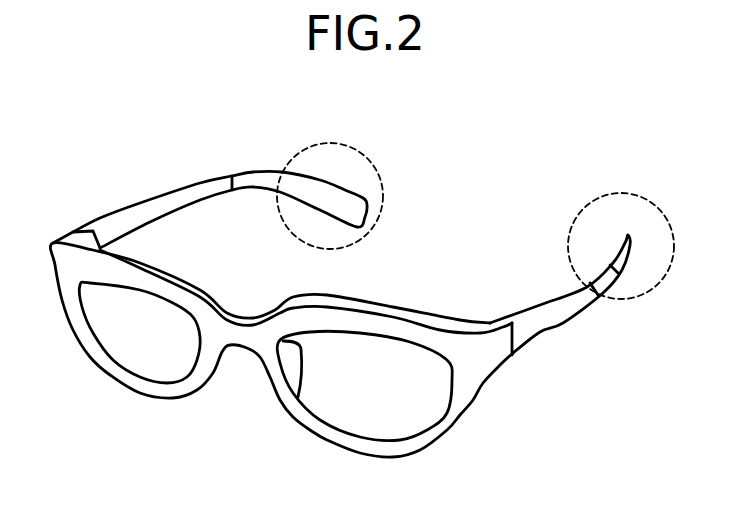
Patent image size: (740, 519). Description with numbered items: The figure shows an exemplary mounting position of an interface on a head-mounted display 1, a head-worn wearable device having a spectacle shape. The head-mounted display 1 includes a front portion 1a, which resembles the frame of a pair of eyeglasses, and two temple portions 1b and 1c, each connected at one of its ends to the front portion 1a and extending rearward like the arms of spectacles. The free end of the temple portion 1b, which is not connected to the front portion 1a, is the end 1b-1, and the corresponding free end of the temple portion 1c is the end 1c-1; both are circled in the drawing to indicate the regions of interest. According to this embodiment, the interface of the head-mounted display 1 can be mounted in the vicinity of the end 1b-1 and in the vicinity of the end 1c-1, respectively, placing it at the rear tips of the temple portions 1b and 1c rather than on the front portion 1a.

The head-mounted display 1 is at (486, 173).
The front portion 1a is at (394, 308).
The temple portion 1b is at (182, 188).
The end 1b-1 is at (333, 143).
The temple portion 1c is at (523, 326).
The end 1c-1 is at (622, 193).